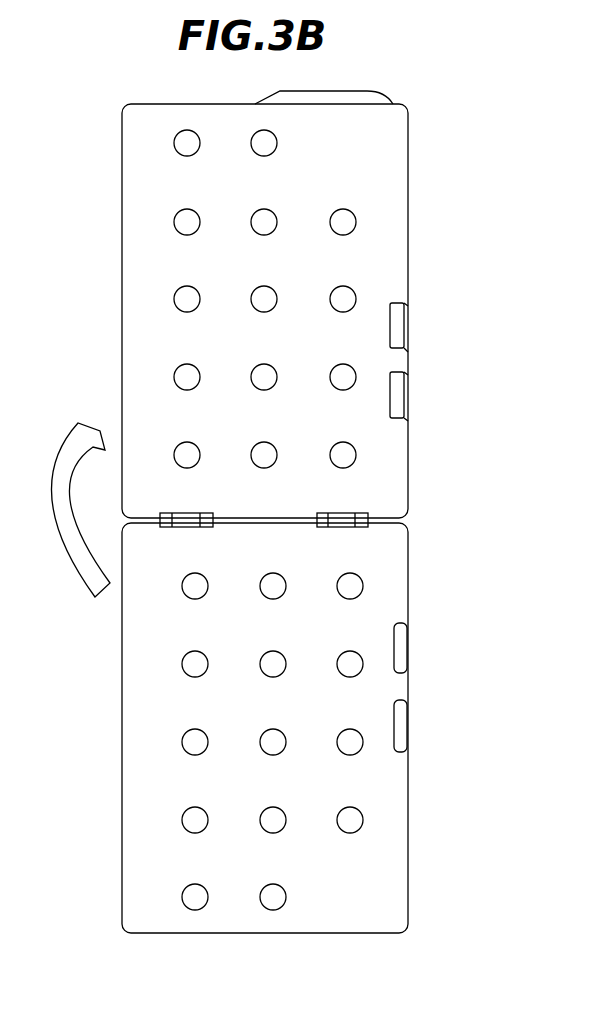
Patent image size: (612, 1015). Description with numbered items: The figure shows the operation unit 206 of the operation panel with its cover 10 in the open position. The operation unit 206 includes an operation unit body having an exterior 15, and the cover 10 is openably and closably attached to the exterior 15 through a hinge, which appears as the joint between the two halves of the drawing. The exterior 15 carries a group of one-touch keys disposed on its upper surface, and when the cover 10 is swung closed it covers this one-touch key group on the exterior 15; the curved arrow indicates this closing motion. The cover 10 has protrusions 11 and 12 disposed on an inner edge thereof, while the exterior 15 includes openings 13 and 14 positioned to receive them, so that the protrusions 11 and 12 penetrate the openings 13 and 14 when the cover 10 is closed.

The operation unit 206 is at (84, 226).
The cover 10 is at (408, 202).
The protrusion 11 is at (408, 328).
The protrusion 12 is at (408, 393).
The opening 13 is at (404, 647).
The opening 14 is at (404, 725).
The exterior 15 is at (408, 828).